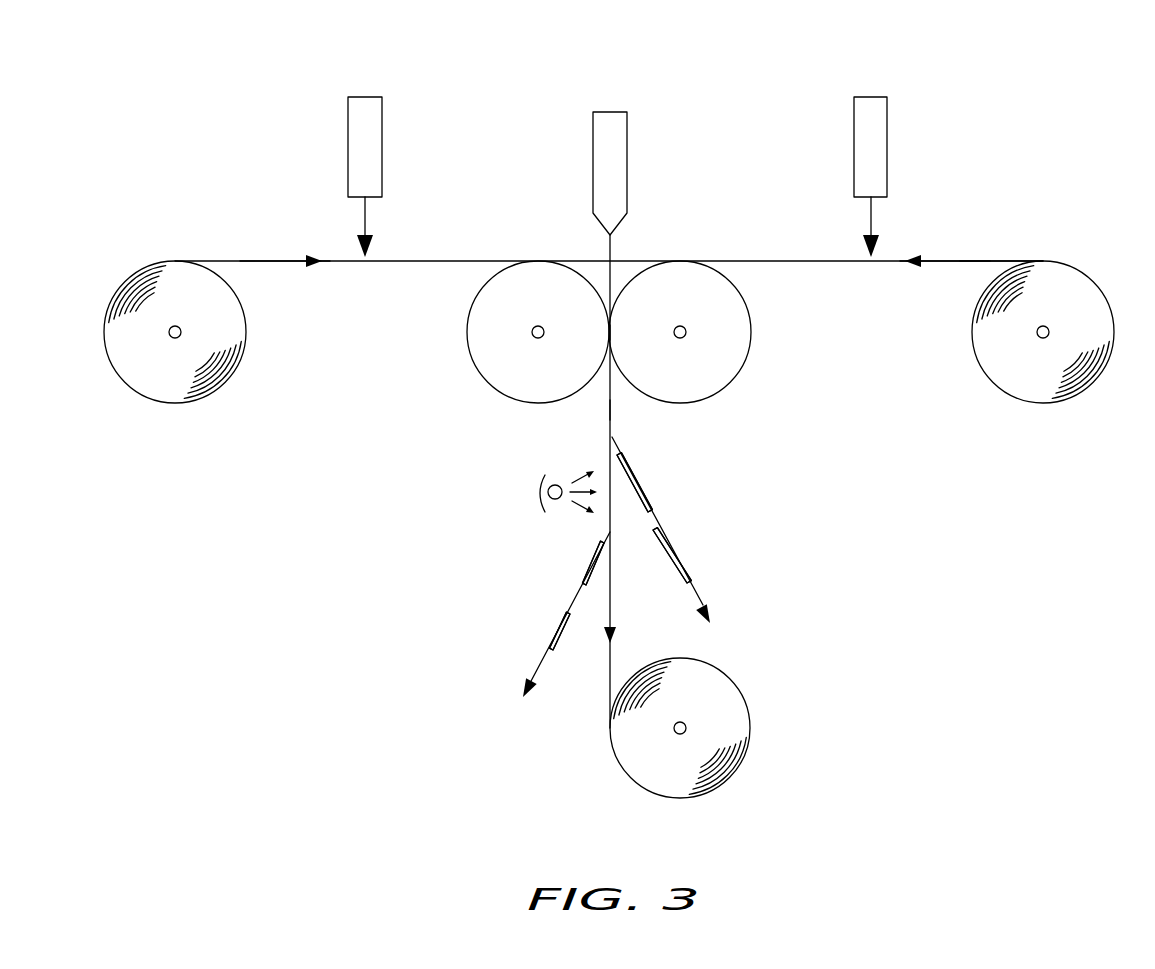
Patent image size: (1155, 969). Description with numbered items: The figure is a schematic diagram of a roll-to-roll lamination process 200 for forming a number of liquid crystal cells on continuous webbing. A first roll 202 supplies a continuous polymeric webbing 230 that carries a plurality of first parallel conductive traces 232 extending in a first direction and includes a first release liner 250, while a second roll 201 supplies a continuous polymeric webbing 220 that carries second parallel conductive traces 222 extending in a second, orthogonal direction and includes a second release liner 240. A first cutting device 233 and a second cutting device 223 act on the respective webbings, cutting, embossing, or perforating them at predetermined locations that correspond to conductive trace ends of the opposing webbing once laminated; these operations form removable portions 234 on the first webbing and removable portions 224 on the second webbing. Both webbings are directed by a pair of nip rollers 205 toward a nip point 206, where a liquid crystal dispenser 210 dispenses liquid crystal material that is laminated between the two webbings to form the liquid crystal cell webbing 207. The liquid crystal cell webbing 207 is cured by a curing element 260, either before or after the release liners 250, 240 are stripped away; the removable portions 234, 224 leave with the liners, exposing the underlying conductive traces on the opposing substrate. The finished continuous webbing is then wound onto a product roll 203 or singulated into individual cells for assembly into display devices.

The roll-to-roll lamination process 200 is at (752, 74).
The second roll 201 is at (1008, 370).
The first roll 202 is at (140, 377).
The product roll 203 is at (720, 690).
The nip rollers 205 is at (488, 353).
The nip point 206 is at (610, 333).
The liquid crystal cell webbing 207 is at (608, 411).
The liquid crystal dispenser 210 is at (610, 123).
The second webbing 220 is at (977, 259).
The second parallel conductive traces 222 is at (955, 258).
The second cutting device 223 is at (872, 112).
The removable portions of the second webbing 224 is at (635, 495).
The first webbing 230 is at (240, 259).
The first parallel conductive traces 232 is at (285, 258).
The first cutting device 233 is at (368, 120).
The removable portions of the first webbing 234 is at (585, 593).
The second release liner 240 is at (935, 265).
The first release liner 250 is at (262, 262).
The curing element 260 is at (538, 495).